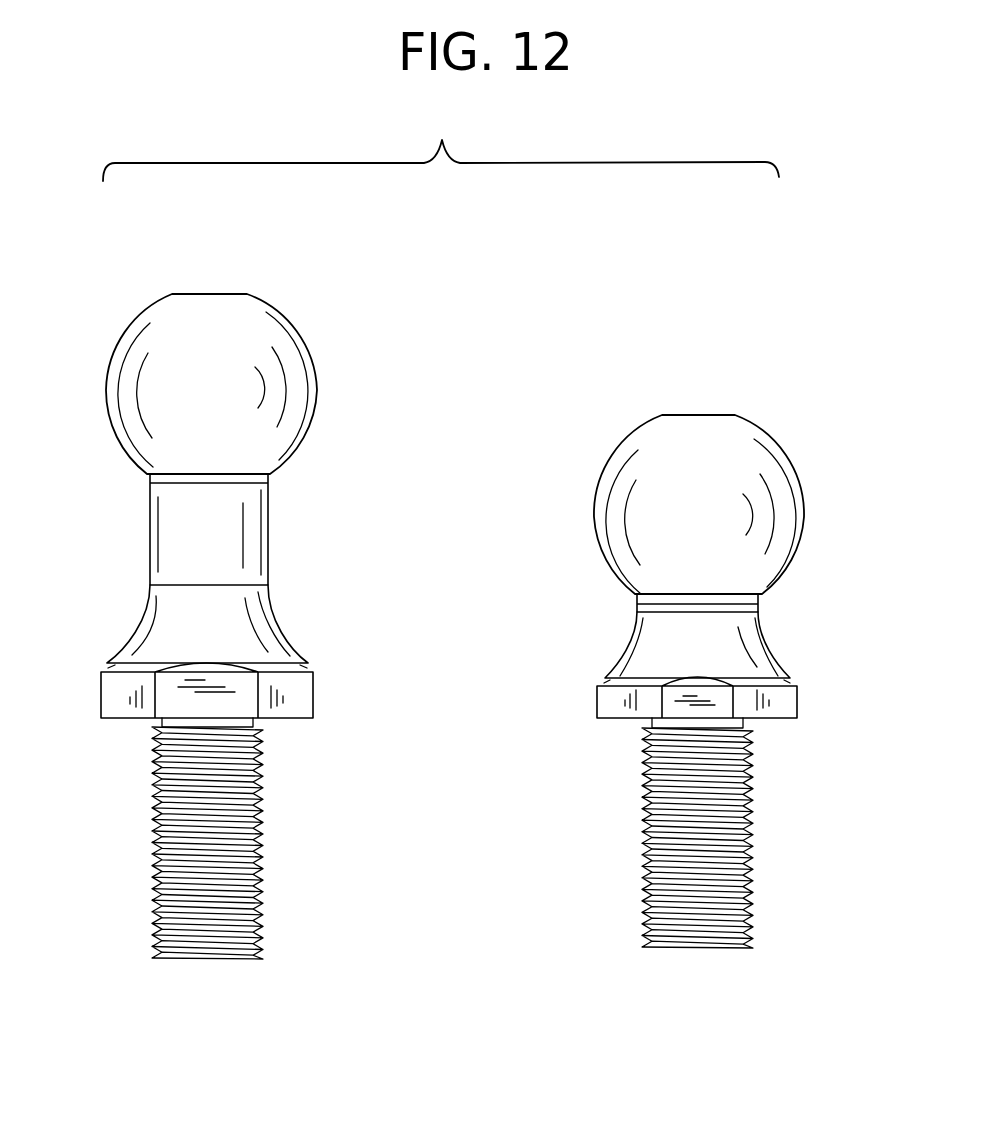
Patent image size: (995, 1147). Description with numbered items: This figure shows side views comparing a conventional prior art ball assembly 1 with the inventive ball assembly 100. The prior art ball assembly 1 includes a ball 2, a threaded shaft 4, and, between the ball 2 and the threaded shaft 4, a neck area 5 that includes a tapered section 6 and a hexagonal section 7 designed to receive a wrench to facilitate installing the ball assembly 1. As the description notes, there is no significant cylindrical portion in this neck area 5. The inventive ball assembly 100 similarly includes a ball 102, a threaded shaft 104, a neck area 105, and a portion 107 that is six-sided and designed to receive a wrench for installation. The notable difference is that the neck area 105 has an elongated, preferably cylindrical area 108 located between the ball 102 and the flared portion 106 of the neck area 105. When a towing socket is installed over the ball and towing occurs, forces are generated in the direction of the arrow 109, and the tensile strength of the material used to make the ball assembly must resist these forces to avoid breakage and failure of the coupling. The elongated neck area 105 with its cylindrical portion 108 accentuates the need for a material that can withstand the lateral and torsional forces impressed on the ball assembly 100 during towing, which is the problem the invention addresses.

The inventive ball assembly 100 is at (299, 289).
The ball 102 is at (290, 358).
The neck area 105 is at (135, 588).
The cylindrical area 108 is at (232, 543).
The flared portion 106 is at (237, 627).
The six-sided portion 107 is at (118, 707).
The threaded shaft 104 is at (256, 845).
The prior art ball assembly 1 is at (719, 379).
The ball 2 is at (668, 452).
The arrow 109 is at (824, 506).
The neck area 5 is at (780, 641).
The tapered section 6 is at (655, 646).
The hexagonal section 7 is at (809, 701).
The threaded shaft 4 is at (660, 848).